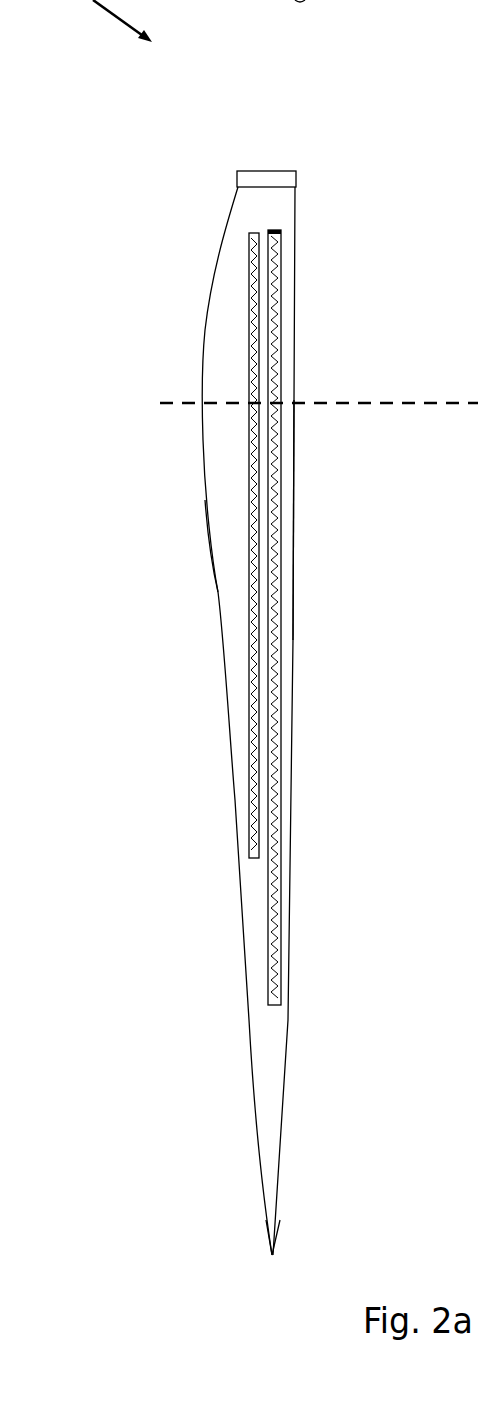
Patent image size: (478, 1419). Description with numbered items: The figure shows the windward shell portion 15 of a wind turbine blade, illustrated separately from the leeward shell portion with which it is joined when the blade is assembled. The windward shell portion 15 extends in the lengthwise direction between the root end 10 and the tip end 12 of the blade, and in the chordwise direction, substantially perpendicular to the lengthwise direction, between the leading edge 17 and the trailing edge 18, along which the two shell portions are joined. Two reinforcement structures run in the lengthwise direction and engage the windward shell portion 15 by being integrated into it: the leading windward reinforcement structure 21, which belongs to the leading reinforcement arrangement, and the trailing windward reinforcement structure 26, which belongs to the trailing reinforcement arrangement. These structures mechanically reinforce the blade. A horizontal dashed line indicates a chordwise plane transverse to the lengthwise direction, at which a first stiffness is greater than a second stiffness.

The root end 10 is at (262, 171).
The tip end 12 is at (274, 1256).
The windward shell portion 15 is at (168, 327).
The leading edge 17 is at (292, 572).
The trailing edge 18 is at (218, 590).
The leading windward reinforcement structure 21 is at (270, 898).
The trailing windward reinforcement structure 26 is at (249, 455).